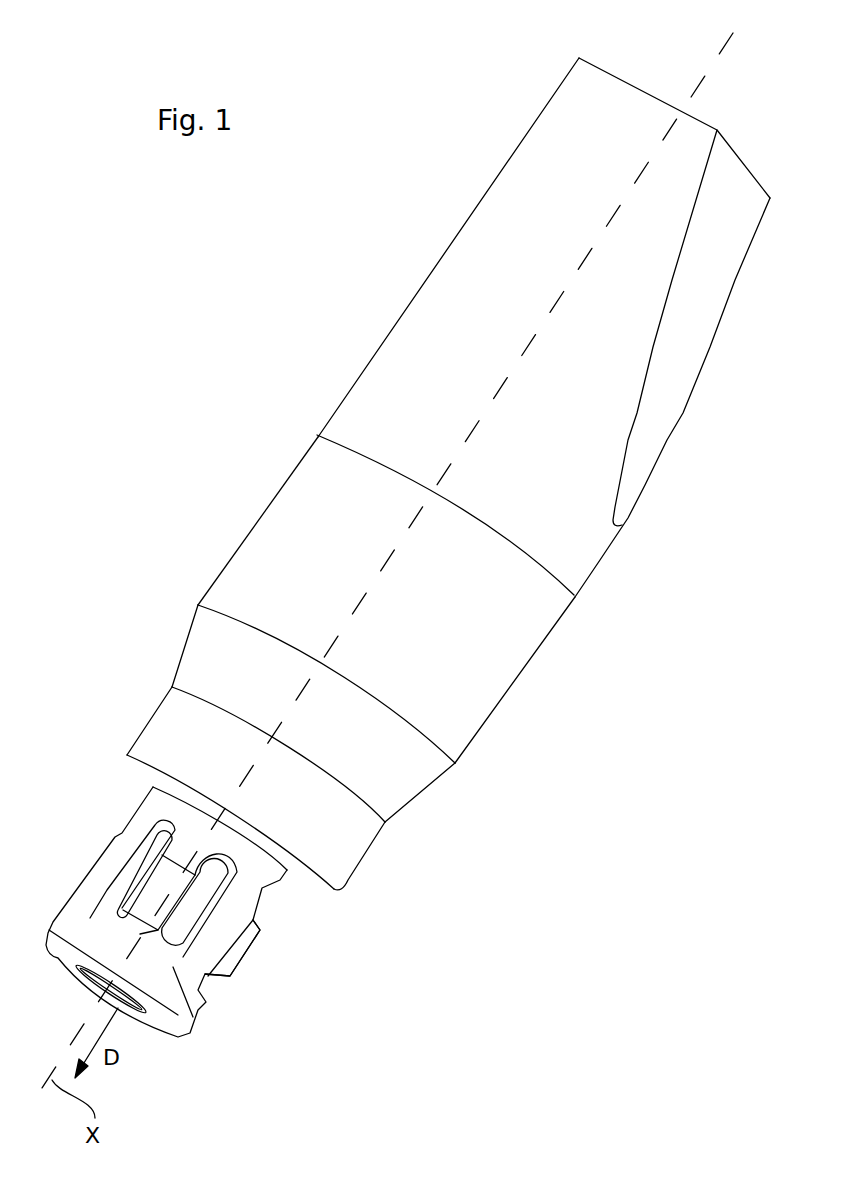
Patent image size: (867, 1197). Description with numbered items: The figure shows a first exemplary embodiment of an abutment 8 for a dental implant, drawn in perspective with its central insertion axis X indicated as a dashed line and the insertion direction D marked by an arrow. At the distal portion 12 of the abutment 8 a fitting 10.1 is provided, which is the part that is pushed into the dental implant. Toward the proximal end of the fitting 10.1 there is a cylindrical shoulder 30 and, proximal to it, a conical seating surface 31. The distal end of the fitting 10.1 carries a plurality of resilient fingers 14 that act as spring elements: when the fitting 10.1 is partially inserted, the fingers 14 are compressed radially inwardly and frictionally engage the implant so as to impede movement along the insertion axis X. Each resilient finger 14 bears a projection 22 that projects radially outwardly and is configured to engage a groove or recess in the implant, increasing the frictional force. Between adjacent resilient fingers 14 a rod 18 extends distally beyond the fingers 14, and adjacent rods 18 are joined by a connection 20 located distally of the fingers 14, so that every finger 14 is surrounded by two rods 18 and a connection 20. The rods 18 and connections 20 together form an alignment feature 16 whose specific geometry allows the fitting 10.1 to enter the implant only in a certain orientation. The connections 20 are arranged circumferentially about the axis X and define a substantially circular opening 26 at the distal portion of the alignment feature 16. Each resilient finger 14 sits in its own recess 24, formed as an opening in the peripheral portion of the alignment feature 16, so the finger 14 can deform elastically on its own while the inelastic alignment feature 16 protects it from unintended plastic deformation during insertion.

The abutment 8 is at (518, 77).
The fitting 10.1 is at (447, 631).
The distal portion 12 is at (422, 852).
The resilient fingers 14 is at (240, 981).
The alignment feature 16 is at (192, 1045).
The rod 18 is at (112, 855).
The connection 20 is at (112, 923).
The projection 22 is at (250, 948).
The recess 24 is at (133, 932).
The circular opening 26 is at (102, 982).
The cylindrical shoulder 30 is at (328, 842).
The conical seating surface 31 is at (407, 777).